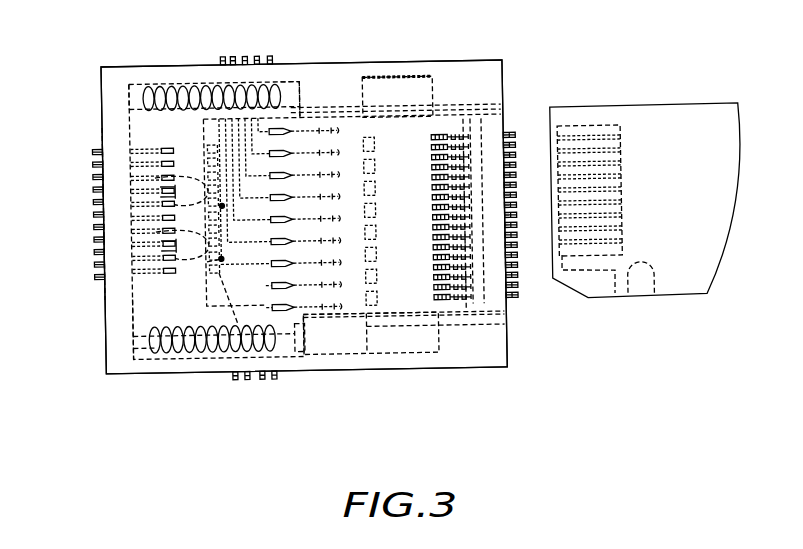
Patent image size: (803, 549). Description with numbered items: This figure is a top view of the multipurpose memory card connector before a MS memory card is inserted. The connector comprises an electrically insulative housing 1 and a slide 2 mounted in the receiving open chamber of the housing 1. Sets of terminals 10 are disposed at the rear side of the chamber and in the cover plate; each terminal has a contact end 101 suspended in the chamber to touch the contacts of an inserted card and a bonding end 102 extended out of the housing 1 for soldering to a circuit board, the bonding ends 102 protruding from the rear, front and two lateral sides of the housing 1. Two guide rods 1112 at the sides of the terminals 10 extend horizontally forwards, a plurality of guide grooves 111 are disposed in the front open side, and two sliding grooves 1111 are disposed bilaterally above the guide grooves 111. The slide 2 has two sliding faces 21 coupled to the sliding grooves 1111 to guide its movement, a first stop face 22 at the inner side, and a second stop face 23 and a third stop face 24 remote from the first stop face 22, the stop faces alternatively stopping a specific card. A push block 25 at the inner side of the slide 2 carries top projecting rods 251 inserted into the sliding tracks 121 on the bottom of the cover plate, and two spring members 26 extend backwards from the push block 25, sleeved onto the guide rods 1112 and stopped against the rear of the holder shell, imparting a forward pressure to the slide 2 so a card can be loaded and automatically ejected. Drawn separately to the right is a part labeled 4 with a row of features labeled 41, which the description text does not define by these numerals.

The electrically insulative housing 1 is at (333, 377).
The terminals 10 is at (273, 63).
The contact end 101 is at (303, 134).
The bonding end 102 is at (223, 59).
The guide grooves 111 is at (485, 337).
The sliding grooves 1111 is at (355, 92).
The guide rods 1112 is at (133, 93).
The slide 2 is at (391, 162).
The sliding faces 21 is at (390, 345).
The first stop face 22 is at (240, 374).
The second stop face 23 is at (437, 91).
The third stop face 24 is at (486, 125).
The push block 25 is at (204, 264).
The top projecting rods 251 is at (219, 208).
The spring members 26 is at (172, 96).
The sliding tracks 121 is at (175, 233).
The cover 4 is at (651, 325).
The grooves 41 is at (595, 136).